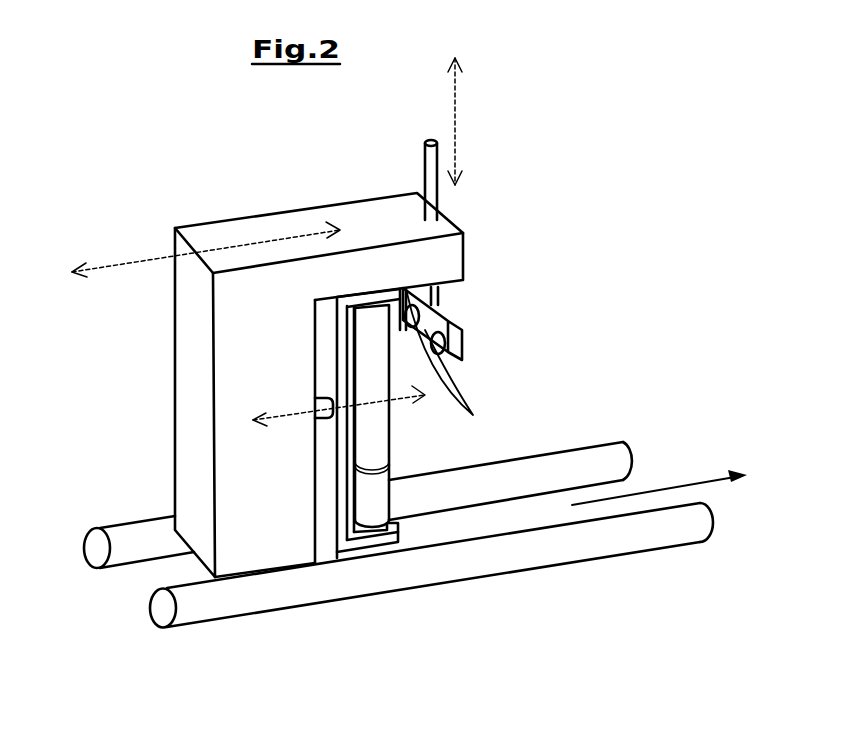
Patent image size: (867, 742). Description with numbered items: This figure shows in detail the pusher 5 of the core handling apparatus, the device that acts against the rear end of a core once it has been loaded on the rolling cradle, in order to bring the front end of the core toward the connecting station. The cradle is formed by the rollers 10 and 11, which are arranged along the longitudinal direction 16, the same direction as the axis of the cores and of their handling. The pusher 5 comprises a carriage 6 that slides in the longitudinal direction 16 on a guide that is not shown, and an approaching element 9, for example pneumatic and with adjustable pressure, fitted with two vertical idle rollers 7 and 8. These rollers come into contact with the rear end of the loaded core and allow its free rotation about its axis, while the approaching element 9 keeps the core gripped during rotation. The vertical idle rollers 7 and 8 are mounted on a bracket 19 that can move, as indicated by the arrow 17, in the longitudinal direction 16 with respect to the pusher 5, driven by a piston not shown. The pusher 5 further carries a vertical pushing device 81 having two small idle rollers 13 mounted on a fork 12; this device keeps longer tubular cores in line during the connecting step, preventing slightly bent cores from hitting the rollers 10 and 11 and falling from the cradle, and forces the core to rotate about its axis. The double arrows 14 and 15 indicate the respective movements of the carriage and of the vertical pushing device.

The pusher 5 is at (190, 168).
The carriage 6 is at (197, 380).
The vertical idle roller 7 is at (373, 492).
The vertical idle roller 8 is at (373, 435).
The approaching element 9 is at (377, 561).
The roller 10 is at (647, 530).
The roller 11 is at (588, 465).
The fork 12 is at (465, 352).
The small idle rollers 13 is at (462, 363).
The horizontal movement direction 14 is at (135, 260).
The vertical movement direction 15 is at (455, 140).
The longitudinal direction 16 is at (672, 483).
The arrow 17 is at (297, 415).
The bracket 19 is at (330, 513).
The vertical pushing device 81 is at (470, 297).